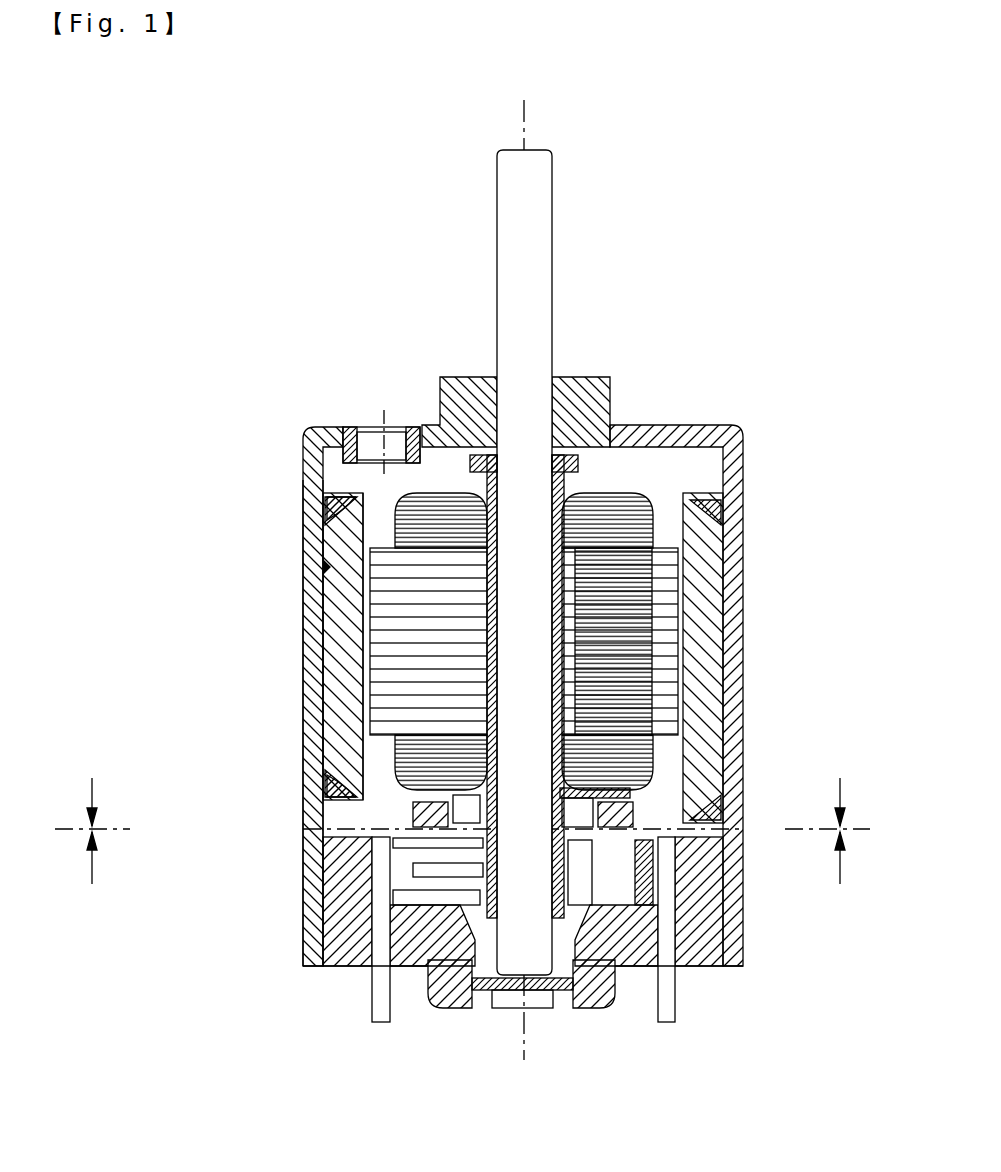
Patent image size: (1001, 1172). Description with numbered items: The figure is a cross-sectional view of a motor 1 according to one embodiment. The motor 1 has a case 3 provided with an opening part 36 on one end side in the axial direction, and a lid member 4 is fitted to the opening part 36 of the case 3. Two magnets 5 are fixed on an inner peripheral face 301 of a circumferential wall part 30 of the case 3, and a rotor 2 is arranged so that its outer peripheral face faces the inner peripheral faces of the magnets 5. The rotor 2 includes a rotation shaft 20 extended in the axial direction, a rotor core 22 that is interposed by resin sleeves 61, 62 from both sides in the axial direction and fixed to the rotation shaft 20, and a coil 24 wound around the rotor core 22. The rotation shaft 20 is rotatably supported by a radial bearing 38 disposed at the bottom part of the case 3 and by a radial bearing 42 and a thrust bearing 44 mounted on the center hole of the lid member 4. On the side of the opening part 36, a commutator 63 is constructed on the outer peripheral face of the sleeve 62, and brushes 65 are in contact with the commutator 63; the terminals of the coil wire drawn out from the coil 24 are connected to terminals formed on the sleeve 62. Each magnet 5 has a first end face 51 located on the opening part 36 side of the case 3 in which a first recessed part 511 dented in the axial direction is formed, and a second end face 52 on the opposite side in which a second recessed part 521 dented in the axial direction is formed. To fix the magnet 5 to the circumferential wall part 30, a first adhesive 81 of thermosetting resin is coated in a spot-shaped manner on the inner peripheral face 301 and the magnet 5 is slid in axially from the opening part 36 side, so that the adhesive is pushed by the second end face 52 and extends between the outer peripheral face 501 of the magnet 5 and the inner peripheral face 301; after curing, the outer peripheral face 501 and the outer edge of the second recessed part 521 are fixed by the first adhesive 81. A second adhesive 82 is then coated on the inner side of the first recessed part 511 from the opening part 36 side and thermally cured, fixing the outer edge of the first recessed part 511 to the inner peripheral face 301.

The motor 1 is at (464, 612).
The rotor 2 is at (621, 562).
The case 3 is at (501, 646).
The lid member 4 is at (520, 965).
The magnet 5 is at (478, 611).
The rotation shaft 20 is at (540, 243).
The rotor core 22 is at (440, 505).
The coil 24 is at (441, 575).
The circumferential wall part 30 is at (316, 554).
The inner peripheral face 301 is at (323, 567).
The opening part 36 is at (622, 863).
The radial bearing 38 is at (473, 378).
The radial bearing 42 is at (462, 1008).
The thrust bearing 44 is at (523, 1042).
The first end face 51 is at (320, 765).
The second end face 52 is at (330, 530).
The resin sleeve 61 is at (560, 493).
The resin sleeve 62 is at (628, 792).
The commutator 63 is at (577, 923).
The brush 65 is at (563, 993).
The first adhesive 81 is at (338, 505).
The second adhesive 82 is at (335, 806).
The outer peripheral face 501 is at (327, 640).
The first recessed part 511 is at (330, 793).
The second recessed part 521 is at (348, 517).